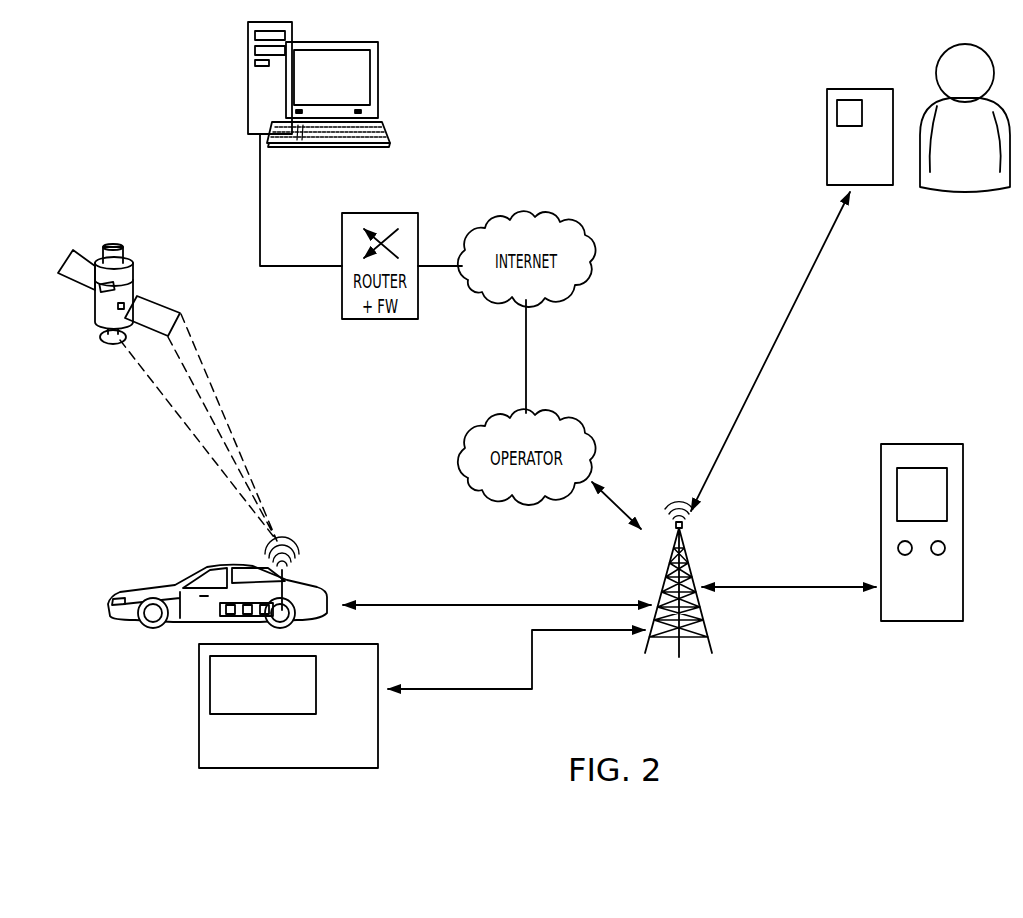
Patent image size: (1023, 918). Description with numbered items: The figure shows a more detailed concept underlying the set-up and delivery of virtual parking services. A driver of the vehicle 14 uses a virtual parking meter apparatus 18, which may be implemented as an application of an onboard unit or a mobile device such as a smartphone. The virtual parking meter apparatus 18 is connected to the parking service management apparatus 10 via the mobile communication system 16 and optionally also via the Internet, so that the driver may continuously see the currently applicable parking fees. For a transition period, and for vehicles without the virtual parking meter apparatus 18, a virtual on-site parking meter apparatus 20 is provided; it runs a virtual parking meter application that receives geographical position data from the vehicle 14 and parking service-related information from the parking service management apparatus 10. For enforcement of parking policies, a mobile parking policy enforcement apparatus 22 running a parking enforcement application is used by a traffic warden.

The parking service management apparatus 10 is at (392, 52).
The vehicle 14 is at (108, 606).
The mobile communication system 16 is at (689, 576).
The virtual parking meter apparatus 18 is at (227, 602).
The virtual on-site parking meter apparatus 20 is at (963, 461).
The mobile parking policy enforcement apparatus 22 is at (856, 88).